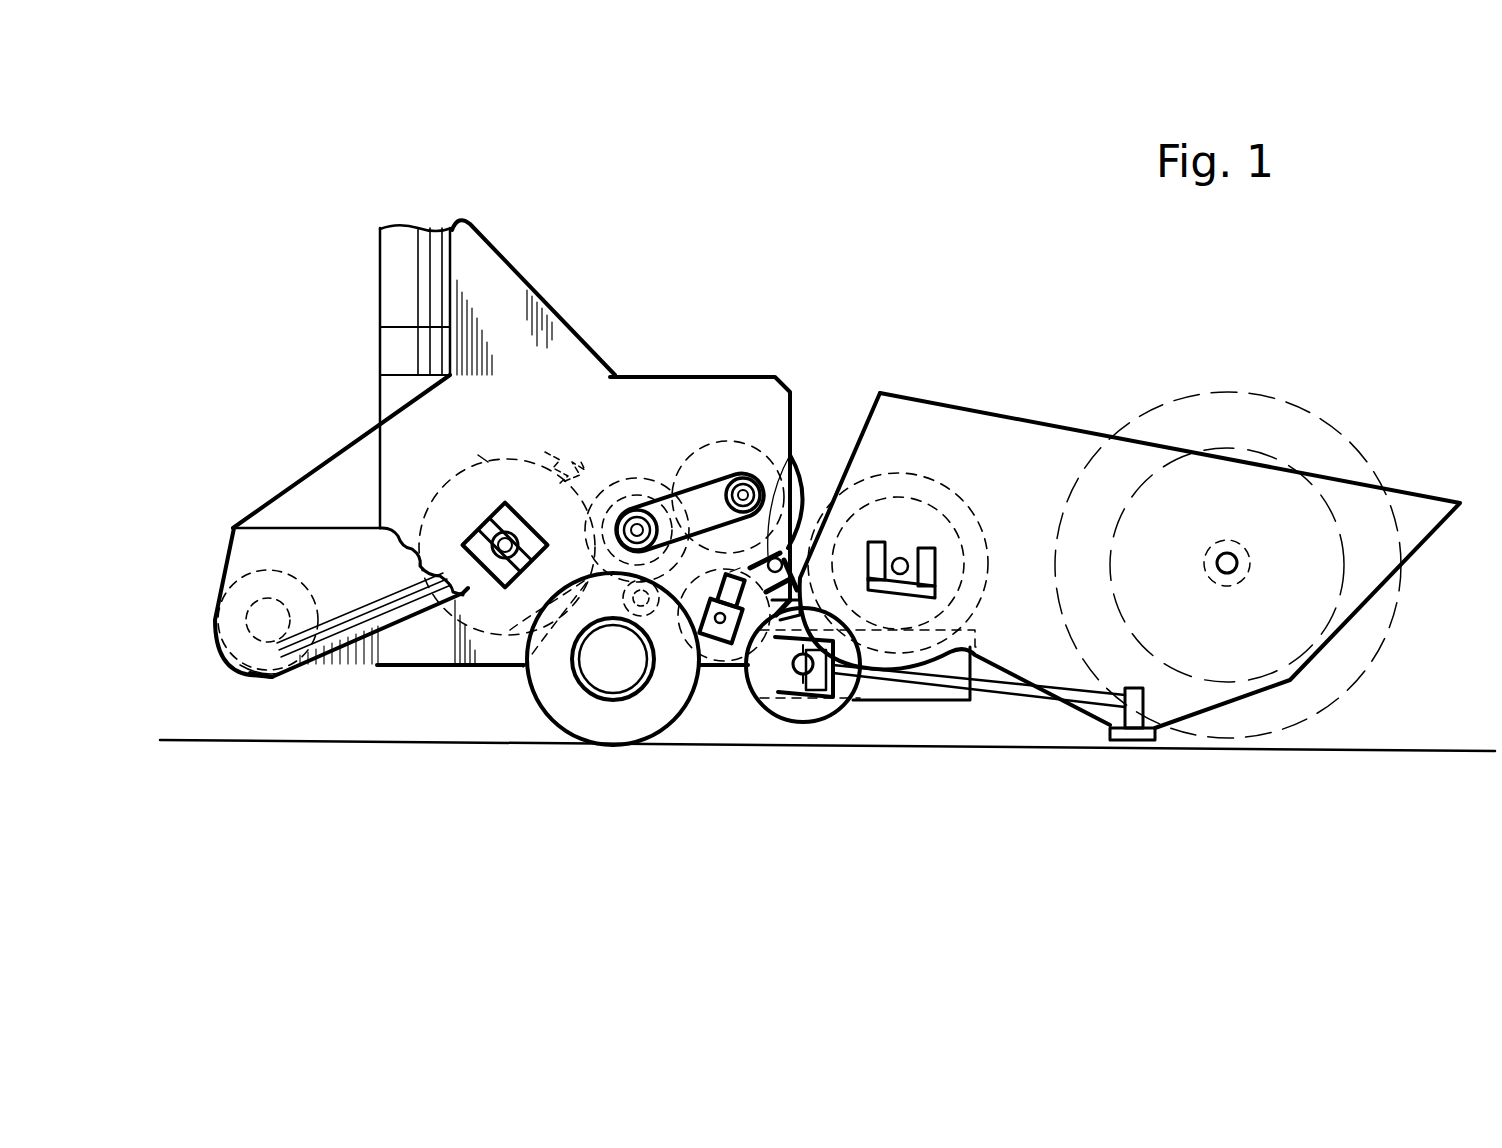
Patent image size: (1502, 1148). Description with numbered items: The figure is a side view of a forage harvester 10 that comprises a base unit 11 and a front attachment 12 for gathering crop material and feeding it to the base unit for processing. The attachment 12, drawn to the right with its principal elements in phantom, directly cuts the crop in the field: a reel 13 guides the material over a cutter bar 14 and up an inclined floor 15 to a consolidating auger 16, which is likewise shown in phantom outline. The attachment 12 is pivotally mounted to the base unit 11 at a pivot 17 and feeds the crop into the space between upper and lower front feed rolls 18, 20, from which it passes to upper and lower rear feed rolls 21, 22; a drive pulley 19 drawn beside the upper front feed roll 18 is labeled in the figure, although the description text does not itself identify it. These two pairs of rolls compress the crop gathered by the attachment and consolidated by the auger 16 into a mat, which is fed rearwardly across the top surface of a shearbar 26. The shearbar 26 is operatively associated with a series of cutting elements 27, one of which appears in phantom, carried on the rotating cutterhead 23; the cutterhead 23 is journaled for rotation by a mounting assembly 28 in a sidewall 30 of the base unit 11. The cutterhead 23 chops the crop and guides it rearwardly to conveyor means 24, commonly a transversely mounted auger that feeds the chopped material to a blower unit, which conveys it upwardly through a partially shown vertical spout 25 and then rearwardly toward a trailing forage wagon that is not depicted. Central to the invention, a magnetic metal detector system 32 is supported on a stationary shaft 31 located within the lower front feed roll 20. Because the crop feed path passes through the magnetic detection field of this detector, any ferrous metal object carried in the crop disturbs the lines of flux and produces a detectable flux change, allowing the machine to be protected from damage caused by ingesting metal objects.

The forage harvester 10 is at (1013, 343).
The base unit 11 is at (635, 374).
The attachment 12 is at (1324, 471).
The reel 13 is at (1227, 393).
The cutter bar 14 is at (1150, 745).
The inclined floor 15 is at (999, 651).
The consolidating auger 16 is at (913, 480).
The pivot mounting 17 is at (768, 556).
The upper front feed roll 18 is at (733, 434).
The drive pulley 19 is at (738, 488).
The lower front feed roll 20 is at (768, 632).
The upper rear feed roll 21 is at (615, 500).
The lower rear feed roll 22 is at (636, 612).
The cutterhead 23 is at (483, 458).
The conveyor means 24 is at (286, 572).
The vertical spout 25 is at (402, 279).
The shearbar 26 is at (520, 687).
The cutting elements 27 is at (545, 452).
The mounting assembly 28 is at (497, 540).
The sidewall 30 is at (632, 415).
The stationary shaft 31 is at (740, 624).
The magnetic metal detector system 32 is at (713, 595).